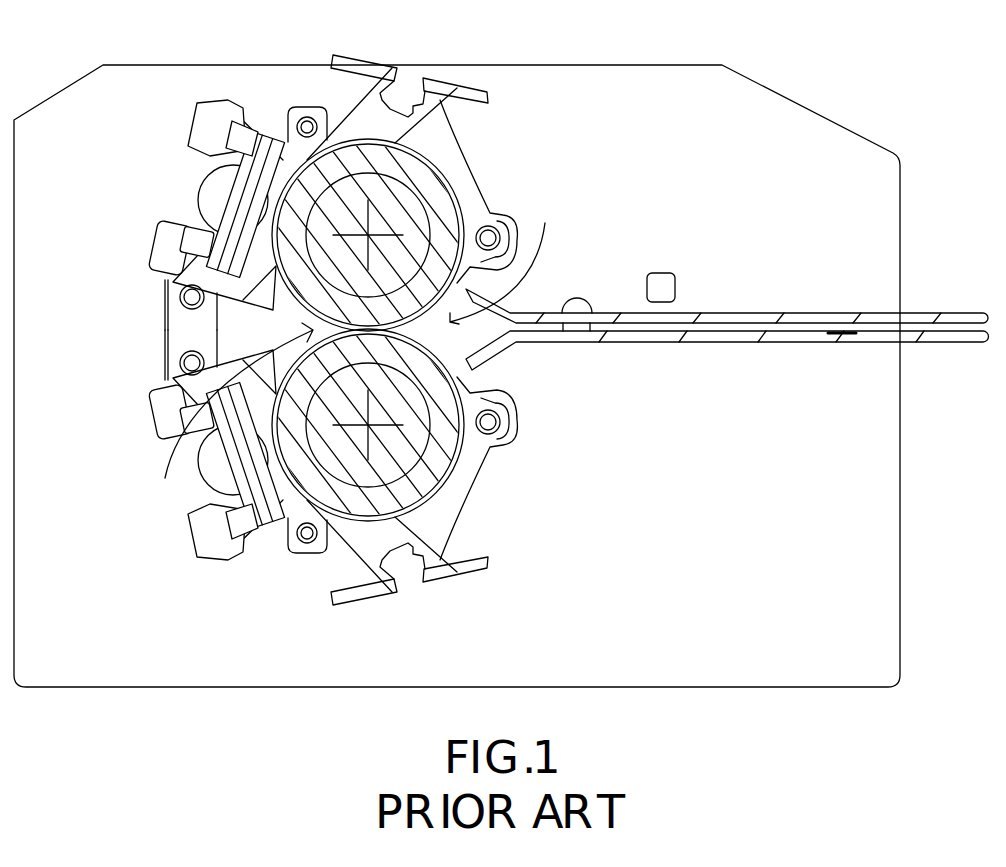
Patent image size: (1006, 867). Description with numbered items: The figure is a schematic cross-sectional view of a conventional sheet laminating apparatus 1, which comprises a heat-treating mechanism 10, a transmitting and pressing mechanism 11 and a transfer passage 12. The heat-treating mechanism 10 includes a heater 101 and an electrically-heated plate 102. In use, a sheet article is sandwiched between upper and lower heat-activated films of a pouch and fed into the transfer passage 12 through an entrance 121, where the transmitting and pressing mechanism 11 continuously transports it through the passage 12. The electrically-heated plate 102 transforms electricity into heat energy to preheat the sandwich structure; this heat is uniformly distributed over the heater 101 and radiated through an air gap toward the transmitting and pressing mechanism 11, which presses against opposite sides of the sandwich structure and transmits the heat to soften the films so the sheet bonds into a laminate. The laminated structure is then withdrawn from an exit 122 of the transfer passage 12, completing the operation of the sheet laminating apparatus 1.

The sheet laminating apparatus 1 is at (842, 52).
The heat-treating mechanism 10 is at (339, 314).
The transmitting and pressing mechanism 11 is at (417, 243).
The heater 101 is at (238, 122).
The electrically-heated plate 102 is at (441, 152).
The transfer passage 12 is at (422, 337).
The entrance 121 is at (230, 416).
The exit 122 is at (507, 261).